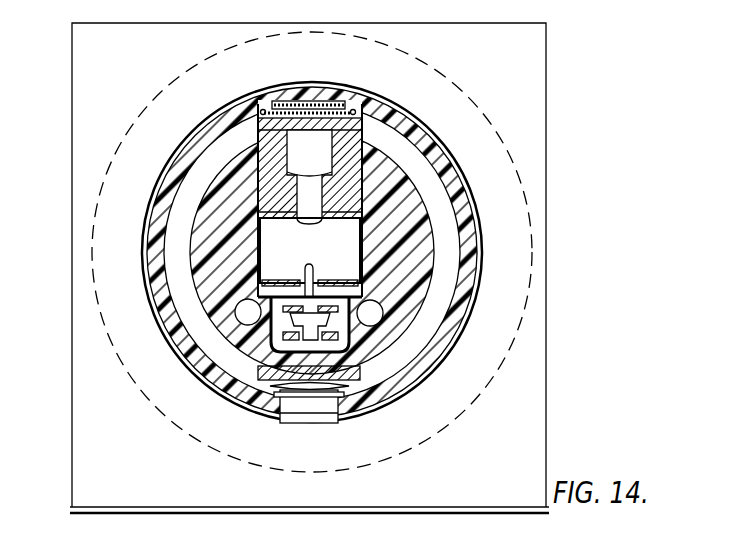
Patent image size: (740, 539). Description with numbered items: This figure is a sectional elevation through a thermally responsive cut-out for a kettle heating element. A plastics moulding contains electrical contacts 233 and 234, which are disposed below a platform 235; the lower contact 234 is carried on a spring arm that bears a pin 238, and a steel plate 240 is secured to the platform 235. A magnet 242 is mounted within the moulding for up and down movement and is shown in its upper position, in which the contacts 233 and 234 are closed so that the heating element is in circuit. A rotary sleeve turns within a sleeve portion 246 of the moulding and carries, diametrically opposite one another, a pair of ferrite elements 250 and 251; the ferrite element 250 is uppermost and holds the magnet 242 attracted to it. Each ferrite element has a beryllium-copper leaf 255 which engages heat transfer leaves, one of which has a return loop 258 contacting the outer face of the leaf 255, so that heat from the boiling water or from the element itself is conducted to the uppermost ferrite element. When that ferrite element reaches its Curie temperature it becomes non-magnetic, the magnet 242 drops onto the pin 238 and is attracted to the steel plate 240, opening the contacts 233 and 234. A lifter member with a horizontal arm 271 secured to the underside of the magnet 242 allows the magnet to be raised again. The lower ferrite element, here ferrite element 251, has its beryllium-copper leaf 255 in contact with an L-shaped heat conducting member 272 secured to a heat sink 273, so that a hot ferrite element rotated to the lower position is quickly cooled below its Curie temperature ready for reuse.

The electrical contact 233 is at (290, 326).
The lower contact 234 is at (330, 330).
The platform 235 is at (338, 282).
The pin 238 is at (312, 263).
The steel plate 240 is at (275, 281).
The magnet 242 is at (352, 142).
The sleeve portion 246 is at (337, 95).
The ferrite element 250 is at (375, 108).
The ferrite element 251 is at (357, 373).
The beryllium-copper leaf 255 is at (292, 113).
The return loop 258 is at (315, 104).
The horizontal arm 271 is at (362, 232).
The heat conducting member 272 is at (276, 398).
The heat sink 273 is at (305, 398).